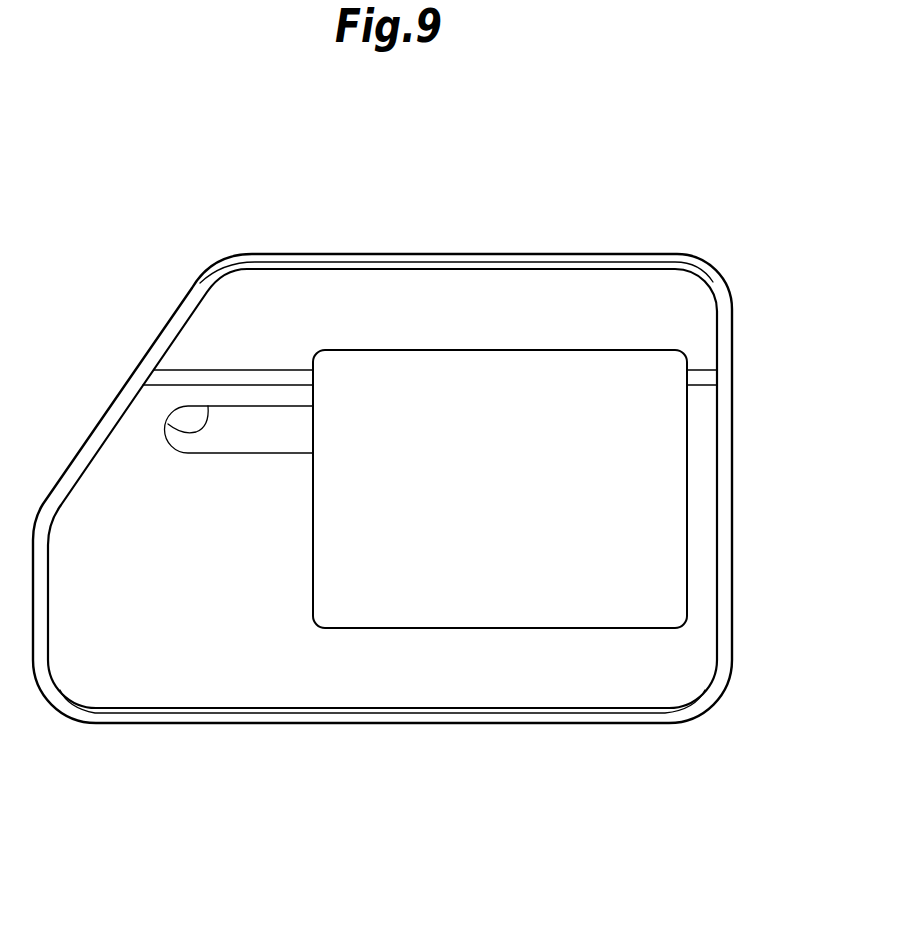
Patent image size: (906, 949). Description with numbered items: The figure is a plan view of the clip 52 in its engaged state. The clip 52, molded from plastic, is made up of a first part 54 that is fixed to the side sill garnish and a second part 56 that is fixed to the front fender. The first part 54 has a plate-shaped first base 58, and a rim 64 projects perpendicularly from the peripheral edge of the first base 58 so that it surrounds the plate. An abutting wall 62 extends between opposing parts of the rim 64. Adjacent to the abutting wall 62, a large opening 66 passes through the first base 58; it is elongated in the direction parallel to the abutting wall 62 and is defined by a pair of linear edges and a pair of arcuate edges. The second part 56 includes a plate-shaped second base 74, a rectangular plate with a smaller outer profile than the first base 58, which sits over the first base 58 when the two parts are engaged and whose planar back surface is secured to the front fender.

The clip 52 is at (593, 178).
The first part 54 is at (682, 257).
The second part 56 is at (698, 425).
The first base 58 is at (431, 293).
The abutting wall 62 is at (255, 377).
The rim 64 is at (200, 281).
The large opening 66 is at (180, 434).
The second base 74 is at (505, 602).